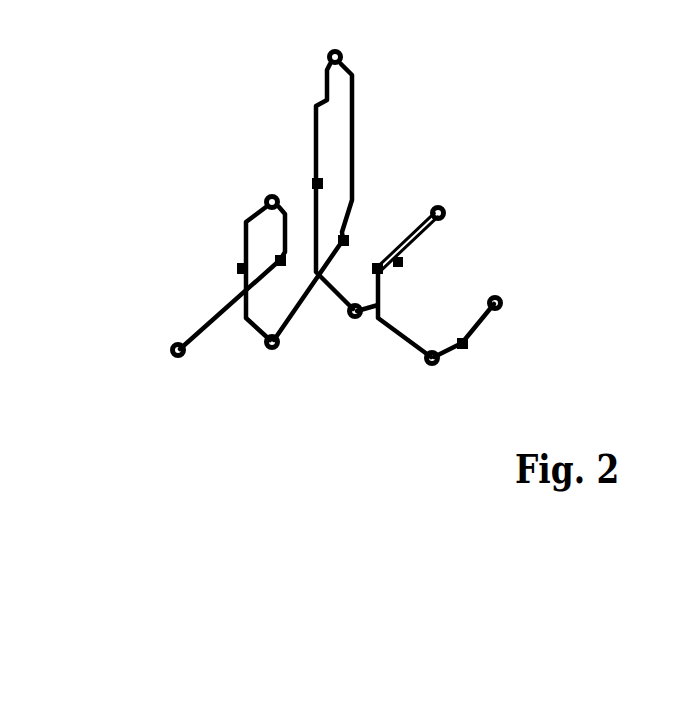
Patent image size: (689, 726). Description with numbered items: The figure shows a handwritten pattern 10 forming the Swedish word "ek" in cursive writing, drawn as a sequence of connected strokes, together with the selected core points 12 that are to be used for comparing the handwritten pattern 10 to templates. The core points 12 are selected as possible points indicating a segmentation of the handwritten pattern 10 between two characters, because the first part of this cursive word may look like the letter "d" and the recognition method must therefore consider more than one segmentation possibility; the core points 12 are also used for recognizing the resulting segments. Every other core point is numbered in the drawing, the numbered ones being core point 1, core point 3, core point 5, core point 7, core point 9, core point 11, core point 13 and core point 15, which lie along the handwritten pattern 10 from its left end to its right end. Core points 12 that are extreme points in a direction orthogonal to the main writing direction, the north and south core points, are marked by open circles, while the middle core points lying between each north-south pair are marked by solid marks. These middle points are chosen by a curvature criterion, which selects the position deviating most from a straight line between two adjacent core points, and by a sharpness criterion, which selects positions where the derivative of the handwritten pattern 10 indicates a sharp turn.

The handwritten pattern 10 is at (143, 133).
The core points 12 is at (238, 277).
The sensor node 1 is at (171, 321).
The sensor node 3 is at (266, 175).
The sensor node 5 is at (276, 377).
The sensor node 7 is at (356, 62).
The sensor node 9 is at (358, 346).
The sensor node 11 is at (441, 184).
The sensor node 13 is at (449, 390).
The sensor node 15 is at (510, 277).